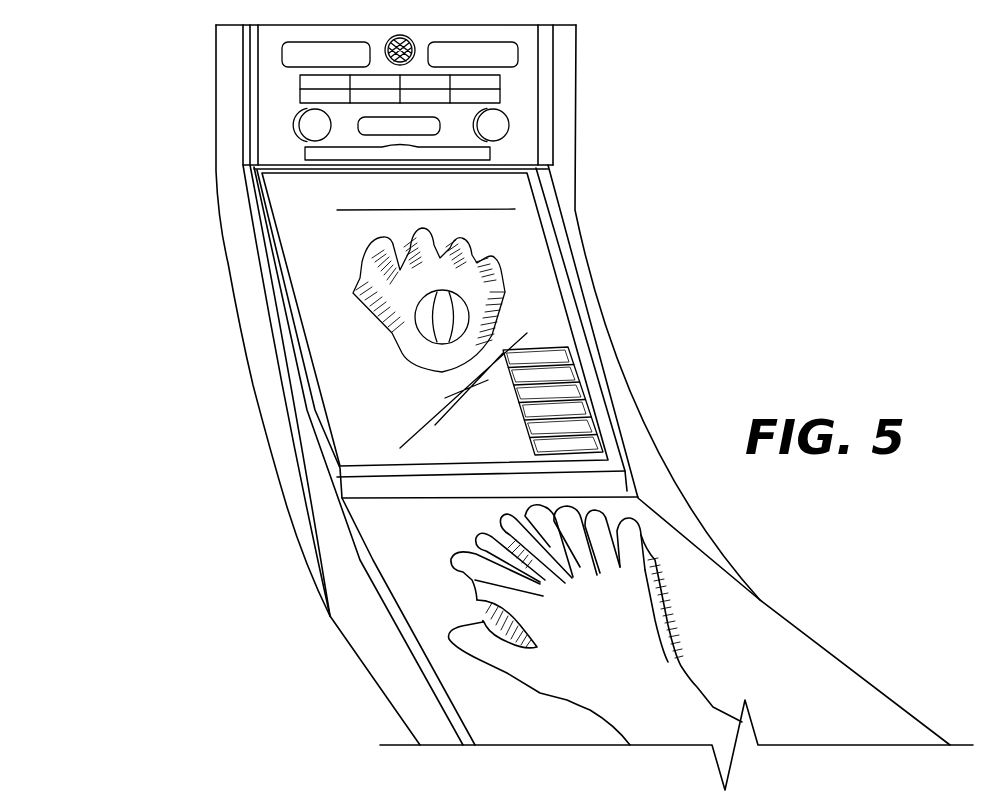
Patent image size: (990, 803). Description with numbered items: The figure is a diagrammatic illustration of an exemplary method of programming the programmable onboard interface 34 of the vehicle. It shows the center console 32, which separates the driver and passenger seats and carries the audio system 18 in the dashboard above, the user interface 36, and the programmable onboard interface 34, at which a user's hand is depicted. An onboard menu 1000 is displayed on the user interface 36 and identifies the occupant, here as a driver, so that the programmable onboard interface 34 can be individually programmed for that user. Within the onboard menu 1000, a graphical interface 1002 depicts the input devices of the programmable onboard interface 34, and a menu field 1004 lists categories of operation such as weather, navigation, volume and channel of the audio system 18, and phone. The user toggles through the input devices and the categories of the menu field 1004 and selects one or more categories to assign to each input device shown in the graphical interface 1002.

The audio system 18 is at (525, 107).
The center console 32 is at (502, 725).
The programmable onboard interface 34 is at (697, 598).
The user interface 36 is at (372, 421).
The onboard menu 1000 is at (338, 353).
The graphical interface 1002 is at (520, 267).
The menu field 1004 is at (592, 402).